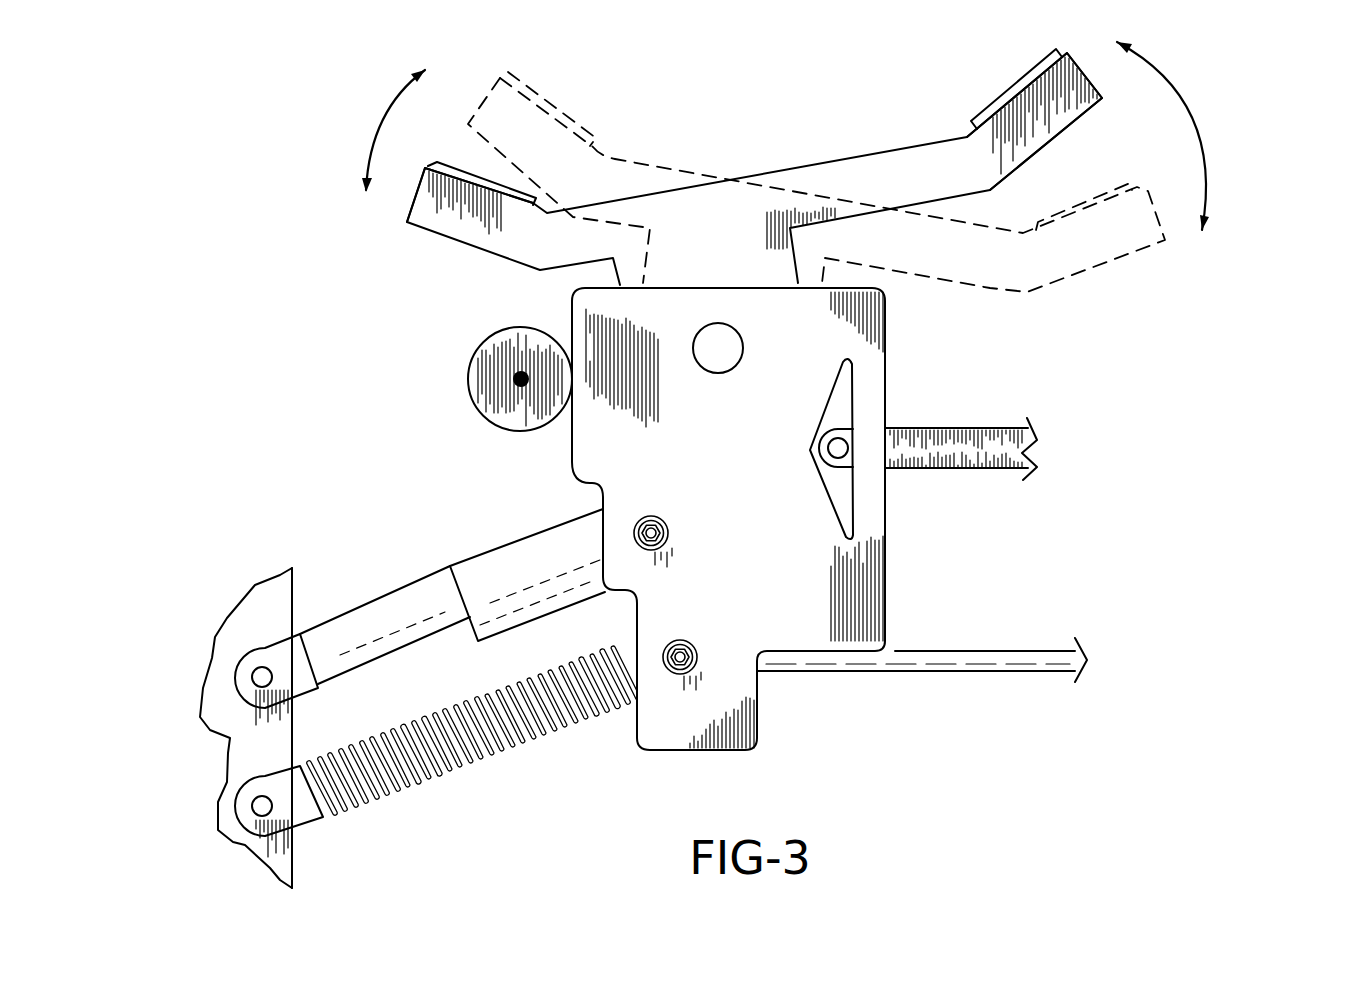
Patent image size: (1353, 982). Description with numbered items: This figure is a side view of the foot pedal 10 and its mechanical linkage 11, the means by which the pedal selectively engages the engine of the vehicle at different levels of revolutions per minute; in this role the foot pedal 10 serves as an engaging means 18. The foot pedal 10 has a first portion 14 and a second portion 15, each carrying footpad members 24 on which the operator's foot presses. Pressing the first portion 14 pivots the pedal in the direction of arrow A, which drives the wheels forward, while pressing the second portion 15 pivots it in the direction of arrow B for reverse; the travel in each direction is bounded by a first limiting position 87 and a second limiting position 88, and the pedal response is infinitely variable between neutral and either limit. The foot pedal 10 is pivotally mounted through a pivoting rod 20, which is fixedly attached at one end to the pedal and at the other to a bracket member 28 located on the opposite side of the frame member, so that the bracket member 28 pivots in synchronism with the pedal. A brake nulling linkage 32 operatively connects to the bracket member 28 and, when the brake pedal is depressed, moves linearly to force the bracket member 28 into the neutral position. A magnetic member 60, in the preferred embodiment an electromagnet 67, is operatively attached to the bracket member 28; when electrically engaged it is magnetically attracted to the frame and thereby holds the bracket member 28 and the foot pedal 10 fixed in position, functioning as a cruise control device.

The foot pedal 10 is at (773, 145).
The mechanical linkage 11 is at (895, 728).
The first portion 14 is at (980, 163).
The second portion 15 is at (513, 247).
The engaging means 18 is at (821, 141).
The pivoting rod 20 is at (743, 348).
The footpad members 24 is at (488, 183).
The bracket member 28 is at (595, 465).
The brake nulling linkage 32 is at (1022, 448).
The magnetic member 60 is at (477, 365).
The electromagnet 67 is at (508, 425).
The first limiting position 87 is at (1232, 234).
The second limiting position 88 is at (328, 189).